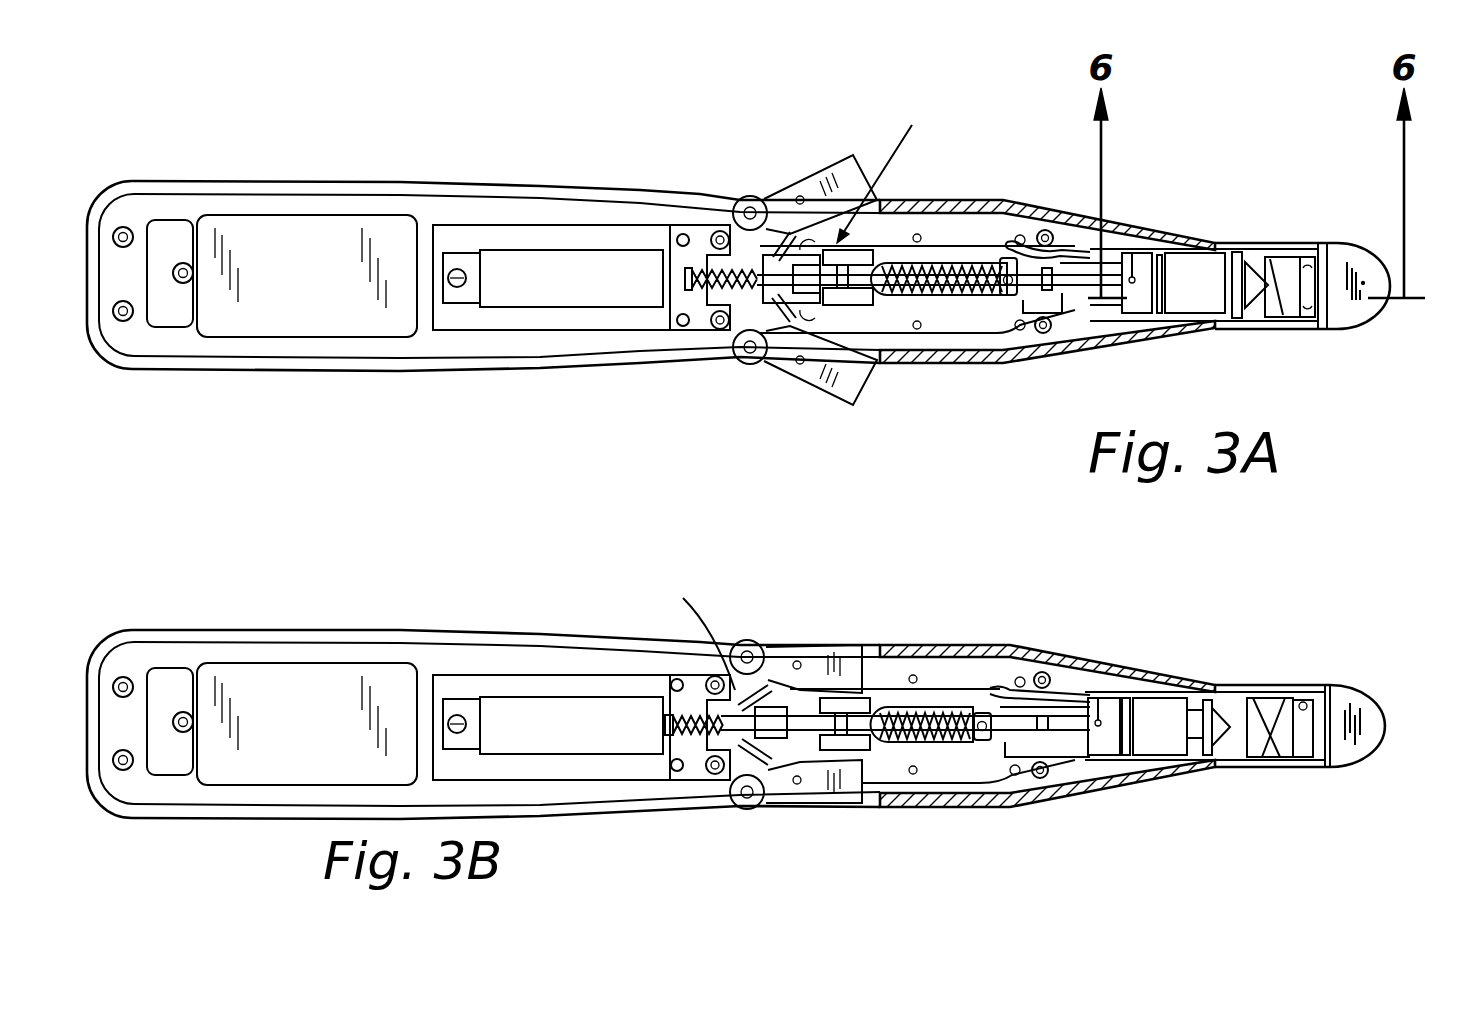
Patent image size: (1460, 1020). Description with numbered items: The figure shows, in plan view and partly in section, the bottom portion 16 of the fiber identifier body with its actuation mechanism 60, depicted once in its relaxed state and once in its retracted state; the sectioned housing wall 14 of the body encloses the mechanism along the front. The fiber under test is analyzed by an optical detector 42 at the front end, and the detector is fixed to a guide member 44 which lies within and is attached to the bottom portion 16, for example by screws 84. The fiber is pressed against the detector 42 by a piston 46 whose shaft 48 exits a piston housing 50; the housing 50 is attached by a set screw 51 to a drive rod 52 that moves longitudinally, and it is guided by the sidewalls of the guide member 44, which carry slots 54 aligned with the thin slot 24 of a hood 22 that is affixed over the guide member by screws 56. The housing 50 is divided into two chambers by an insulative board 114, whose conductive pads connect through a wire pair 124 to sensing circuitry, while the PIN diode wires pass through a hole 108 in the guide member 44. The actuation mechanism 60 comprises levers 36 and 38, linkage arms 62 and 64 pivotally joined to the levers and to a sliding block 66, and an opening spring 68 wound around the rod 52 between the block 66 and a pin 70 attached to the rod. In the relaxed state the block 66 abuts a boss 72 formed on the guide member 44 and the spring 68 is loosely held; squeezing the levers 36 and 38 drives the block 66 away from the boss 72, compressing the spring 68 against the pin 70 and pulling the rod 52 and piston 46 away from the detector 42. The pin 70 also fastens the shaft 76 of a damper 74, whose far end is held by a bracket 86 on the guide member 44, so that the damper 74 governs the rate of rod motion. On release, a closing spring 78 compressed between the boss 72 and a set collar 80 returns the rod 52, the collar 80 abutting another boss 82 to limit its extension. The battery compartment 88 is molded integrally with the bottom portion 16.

In FIG. 3A, the barrel housing 14 is at (930, 200).
In FIG. 3B, the barrel housing 14 is at (912, 645).
In FIG. 3A, the bottom portion 16 is at (347, 182).
In FIG. 3B, the bottom portion 16 is at (240, 630).
In FIG. 3A, the hood 22 is at (1295, 250).
In FIG. 3B, the hood 22 is at (1243, 692).
In FIG. 3A, the slot 24 is at (1230, 245).
In FIG. 3B, the slot 24 is at (1235, 692).
In FIG. 3A, the lever 36 is at (828, 400).
In FIG. 3B, the lever 36 is at (830, 806).
In FIG. 3A, the lever 38 is at (838, 160).
In FIG. 3B, the lever 38 is at (805, 647).
In FIG. 3A, the optical detector 42 is at (1292, 320).
In FIG. 3B, the optical detector 42 is at (1272, 715).
In FIG. 3A, the guide member 44 is at (1068, 240).
In FIG. 3B, the guide member 44 is at (1108, 690).
In FIG. 3A, the piston 46 is at (1255, 265).
In FIG. 3B, the piston 46 is at (1220, 765).
In FIG. 3B, the shaft 48 is at (1185, 760).
In FIG. 3A, the piston housing 50 is at (1165, 330).
In FIG. 3B, the piston housing 50 is at (1120, 758).
In FIG. 3A, the set screw 51 is at (1135, 256).
In FIG. 3B, the set screw 51 is at (1098, 698).
In FIG. 3A, the drive rod 52 is at (928, 297).
In FIG. 3B, the drive rod 52 is at (805, 694).
In FIG. 3A, the slot 54 is at (1228, 280).
In FIG. 3B, the slot 54 is at (1165, 698).
In FIG. 3A, the screw 56 is at (1310, 258).
In FIG. 3B, the screw 56 is at (1318, 700).
In FIG. 3A, the actuation mechanism 60 is at (892, 169).
In FIG. 3B, the actuation mechanism 60 is at (692, 628).
In FIG. 3A, the linkage arm 62 is at (760, 364).
In FIG. 3B, the linkage arm 62 is at (768, 805).
In FIG. 3A, the linkage arm 64 is at (757, 196).
In FIG. 3B, the linkage arm 64 is at (752, 641).
In FIG. 3A, the sliding block 66 is at (855, 345).
In FIG. 3B, the sliding block 66 is at (800, 748).
In FIG. 3A, the opening spring 68 is at (700, 300).
In FIG. 3B, the opening spring 68 is at (665, 712).
In FIG. 3A, the pin 70 is at (682, 278).
In FIG. 3B, the pin 70 is at (662, 723).
In FIG. 3A, the boss 72 is at (862, 262).
In FIG. 3B, the boss 72 is at (868, 745).
In FIG. 3A, the damper 74 is at (500, 295).
In FIG. 3B, the damper 74 is at (496, 738).
In FIG. 3A, the damper shaft 76 is at (668, 248).
In FIG. 3B, the damper shaft 76 is at (665, 748).
In FIG. 3A, the closing spring 78 is at (932, 265).
In FIG. 3B, the closing spring 78 is at (935, 708).
In FIG. 3A, the set collar 80 is at (983, 257).
In FIG. 3B, the set collar 80 is at (980, 742).
In FIG. 3A, the boss 82 is at (1050, 335).
In FIG. 3B, the boss 82 is at (1010, 800).
In FIG. 3A, the screw 84 is at (953, 355).
In FIG. 3B, the screw 84 is at (940, 665).
In FIG. 3A, the bracket 86 is at (462, 248).
In FIG. 3B, the bracket 86 is at (465, 690).
In FIG. 3A, the compartment 88 is at (271, 273).
In FIG. 3B, the compartment 88 is at (279, 731).
In FIG. 3A, the hole 108 is at (1370, 305).
In FIG. 3B, the hole 108 is at (1355, 740).
In FIG. 3A, the board 114 is at (1159, 255).
In FIG. 3B, the board 114 is at (1150, 697).
In FIG. 3A, the wire pair 124 is at (1108, 237).
In FIG. 3B, the wire pair 124 is at (1010, 690).